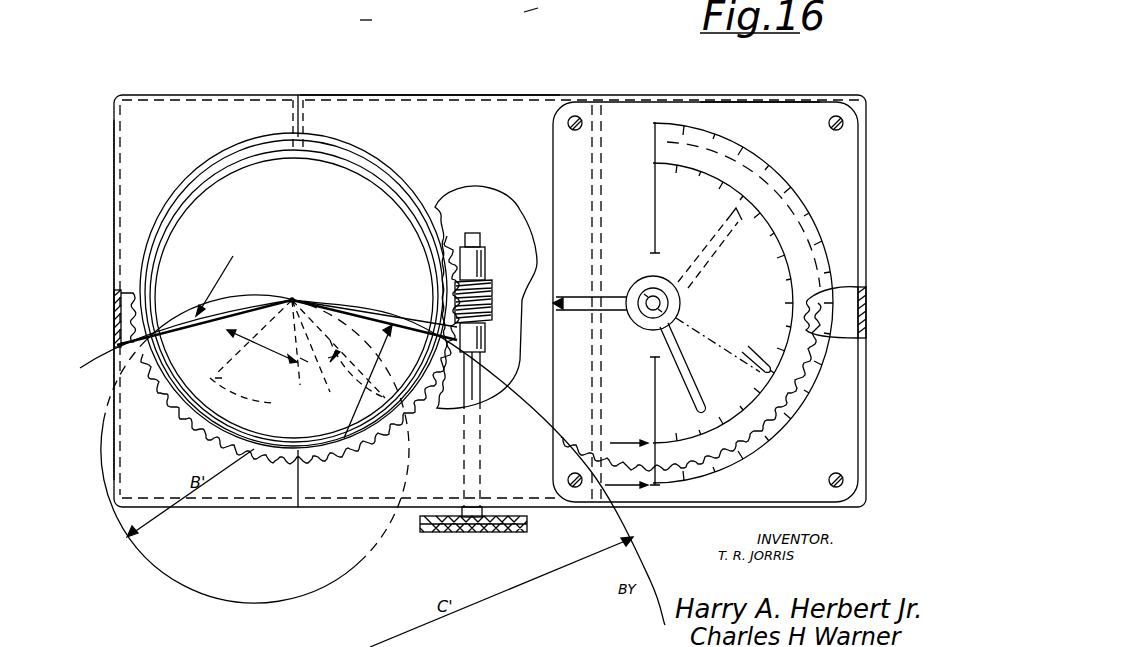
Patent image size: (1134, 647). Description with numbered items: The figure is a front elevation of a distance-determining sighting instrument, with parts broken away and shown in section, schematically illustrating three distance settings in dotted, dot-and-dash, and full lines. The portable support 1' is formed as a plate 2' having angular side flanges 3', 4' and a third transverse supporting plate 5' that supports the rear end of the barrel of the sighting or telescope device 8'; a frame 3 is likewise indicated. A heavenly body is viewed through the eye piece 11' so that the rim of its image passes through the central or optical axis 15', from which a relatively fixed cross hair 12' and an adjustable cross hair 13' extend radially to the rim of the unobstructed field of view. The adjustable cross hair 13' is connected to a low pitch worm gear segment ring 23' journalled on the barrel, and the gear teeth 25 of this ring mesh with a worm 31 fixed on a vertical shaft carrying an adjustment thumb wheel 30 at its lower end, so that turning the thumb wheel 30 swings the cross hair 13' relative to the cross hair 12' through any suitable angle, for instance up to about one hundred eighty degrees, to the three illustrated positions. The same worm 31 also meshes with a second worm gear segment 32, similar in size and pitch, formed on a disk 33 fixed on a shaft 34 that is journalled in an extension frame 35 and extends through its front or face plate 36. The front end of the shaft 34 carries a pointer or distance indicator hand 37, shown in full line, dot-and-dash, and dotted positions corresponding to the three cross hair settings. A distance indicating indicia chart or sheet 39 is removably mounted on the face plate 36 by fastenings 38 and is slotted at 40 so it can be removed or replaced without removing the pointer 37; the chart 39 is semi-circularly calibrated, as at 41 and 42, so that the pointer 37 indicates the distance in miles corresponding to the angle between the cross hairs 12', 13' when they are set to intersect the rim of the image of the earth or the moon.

The portable support 1' is at (490, 272).
The plate 2' is at (430, 79).
The frame 3 is at (534, 9).
The angular side flange 3' is at (103, 300).
The angular side flange 4' is at (612, 302).
The transverse supporting plate 5' is at (290, 285).
The telescope device 8' is at (370, 10).
The eye piece 11' is at (293, 280).
The fixed cross hair 12' is at (186, 300).
The adjustable cross hair 13' is at (307, 339).
The central axis 15' is at (300, 322).
The worm gear segment ring 23' is at (374, 369).
The gear teeth 25 is at (460, 412).
The adjustment thumb wheel 30 is at (447, 538).
The worm 31 is at (486, 312).
The second worm gear segment 32 is at (494, 250).
The disk 33 is at (534, 200).
The shaft 34 is at (660, 303).
The extension frame 35 is at (700, 102).
The face plate 36 is at (858, 246).
The pointer 37 is at (703, 262).
The fastenings 38 is at (568, 124).
The distance indicating chart 39 is at (758, 102).
The slot 40 is at (556, 308).
The calibration 41 is at (796, 165).
The calibration 42 is at (738, 185).